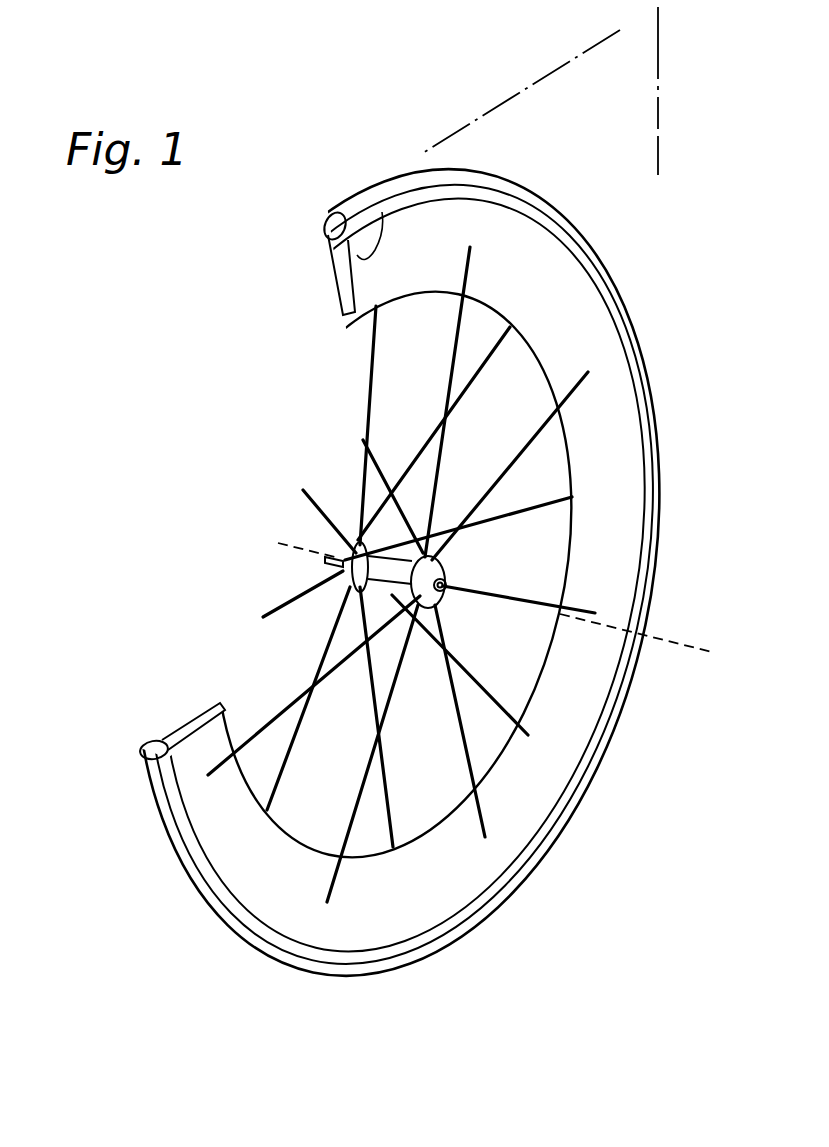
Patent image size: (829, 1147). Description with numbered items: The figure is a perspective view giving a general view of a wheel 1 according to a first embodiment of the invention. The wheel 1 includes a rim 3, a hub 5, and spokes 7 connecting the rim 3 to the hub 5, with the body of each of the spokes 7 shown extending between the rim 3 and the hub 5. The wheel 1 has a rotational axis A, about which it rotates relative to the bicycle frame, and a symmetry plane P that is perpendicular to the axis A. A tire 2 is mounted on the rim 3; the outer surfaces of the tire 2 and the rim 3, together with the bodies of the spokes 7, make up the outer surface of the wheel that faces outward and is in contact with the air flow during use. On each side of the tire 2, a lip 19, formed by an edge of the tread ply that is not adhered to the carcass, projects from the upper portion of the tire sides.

The wheel 1 is at (674, 372).
The tire 2 is at (369, 203).
The lip 19 is at (350, 238).
The rim 3 is at (370, 294).
The spokes 7 is at (364, 440).
The hub 5 is at (340, 576).
The rotational axis A is at (682, 647).
The symmetry plane P is at (659, 43).